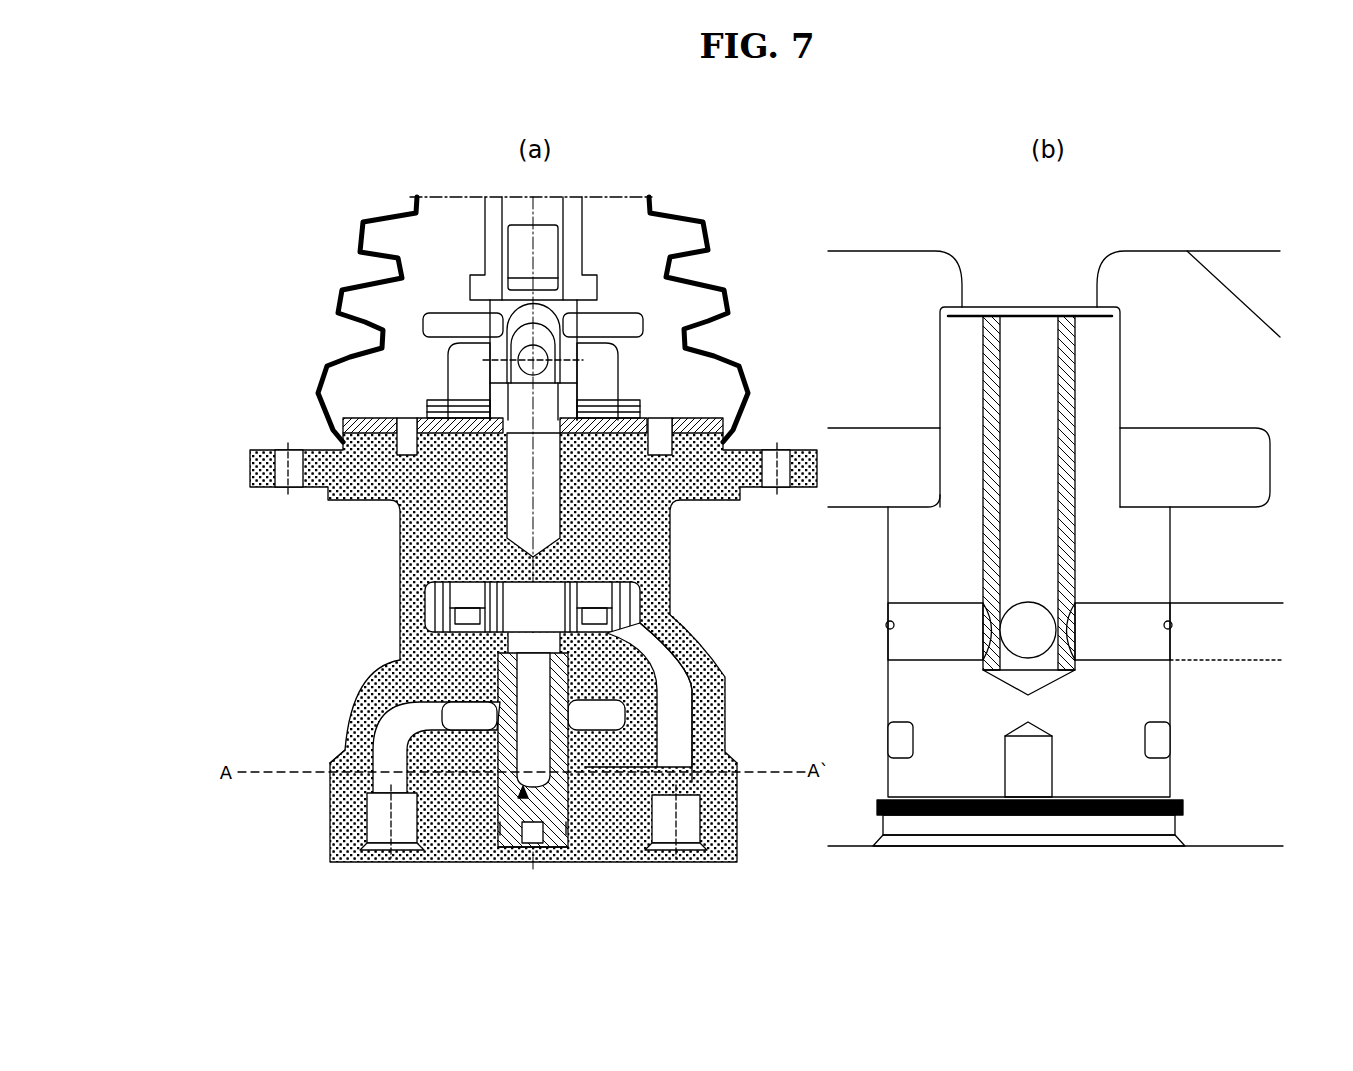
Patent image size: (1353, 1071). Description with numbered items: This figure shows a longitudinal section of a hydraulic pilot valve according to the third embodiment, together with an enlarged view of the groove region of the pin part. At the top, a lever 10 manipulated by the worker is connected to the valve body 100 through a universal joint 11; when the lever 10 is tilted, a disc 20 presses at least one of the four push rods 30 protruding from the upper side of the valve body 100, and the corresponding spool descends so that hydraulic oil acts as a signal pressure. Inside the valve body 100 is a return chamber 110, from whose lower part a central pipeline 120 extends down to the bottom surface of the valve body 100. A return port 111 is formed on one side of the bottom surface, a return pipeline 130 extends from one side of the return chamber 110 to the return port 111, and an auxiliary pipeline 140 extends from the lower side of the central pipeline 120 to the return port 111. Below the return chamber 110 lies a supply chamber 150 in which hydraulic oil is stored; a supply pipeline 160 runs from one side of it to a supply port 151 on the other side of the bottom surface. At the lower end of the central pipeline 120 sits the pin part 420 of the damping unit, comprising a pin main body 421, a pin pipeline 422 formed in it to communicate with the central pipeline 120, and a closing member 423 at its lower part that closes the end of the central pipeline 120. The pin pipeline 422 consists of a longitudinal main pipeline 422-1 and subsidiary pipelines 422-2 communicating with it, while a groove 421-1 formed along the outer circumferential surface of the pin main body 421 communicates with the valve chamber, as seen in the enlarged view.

The lever 10 is at (584, 220).
The universal joint 11 is at (498, 347).
The disc 20 is at (617, 307).
The push rod 30 is at (620, 367).
The valve body 100 is at (375, 542).
The return chamber 110 is at (425, 598).
The return port 111 is at (684, 863).
The central pipeline 120 is at (400, 706).
The return pipeline 130 is at (692, 680).
The auxiliary pipeline 140 is at (633, 852).
The supply chamber 150 is at (612, 708).
The supply port 151 is at (395, 865).
The supply pipeline 160 is at (365, 760).
The pin part 420 is at (540, 878).
The pin main body 421 is at (617, 750).
The groove 421-1 is at (405, 800).
The pin pipeline 422 is at (467, 850).
The main pipeline 422-1 is at (1028, 410).
The subsidiary pipeline 422-2 is at (912, 620).
The closing member 423 is at (568, 852).